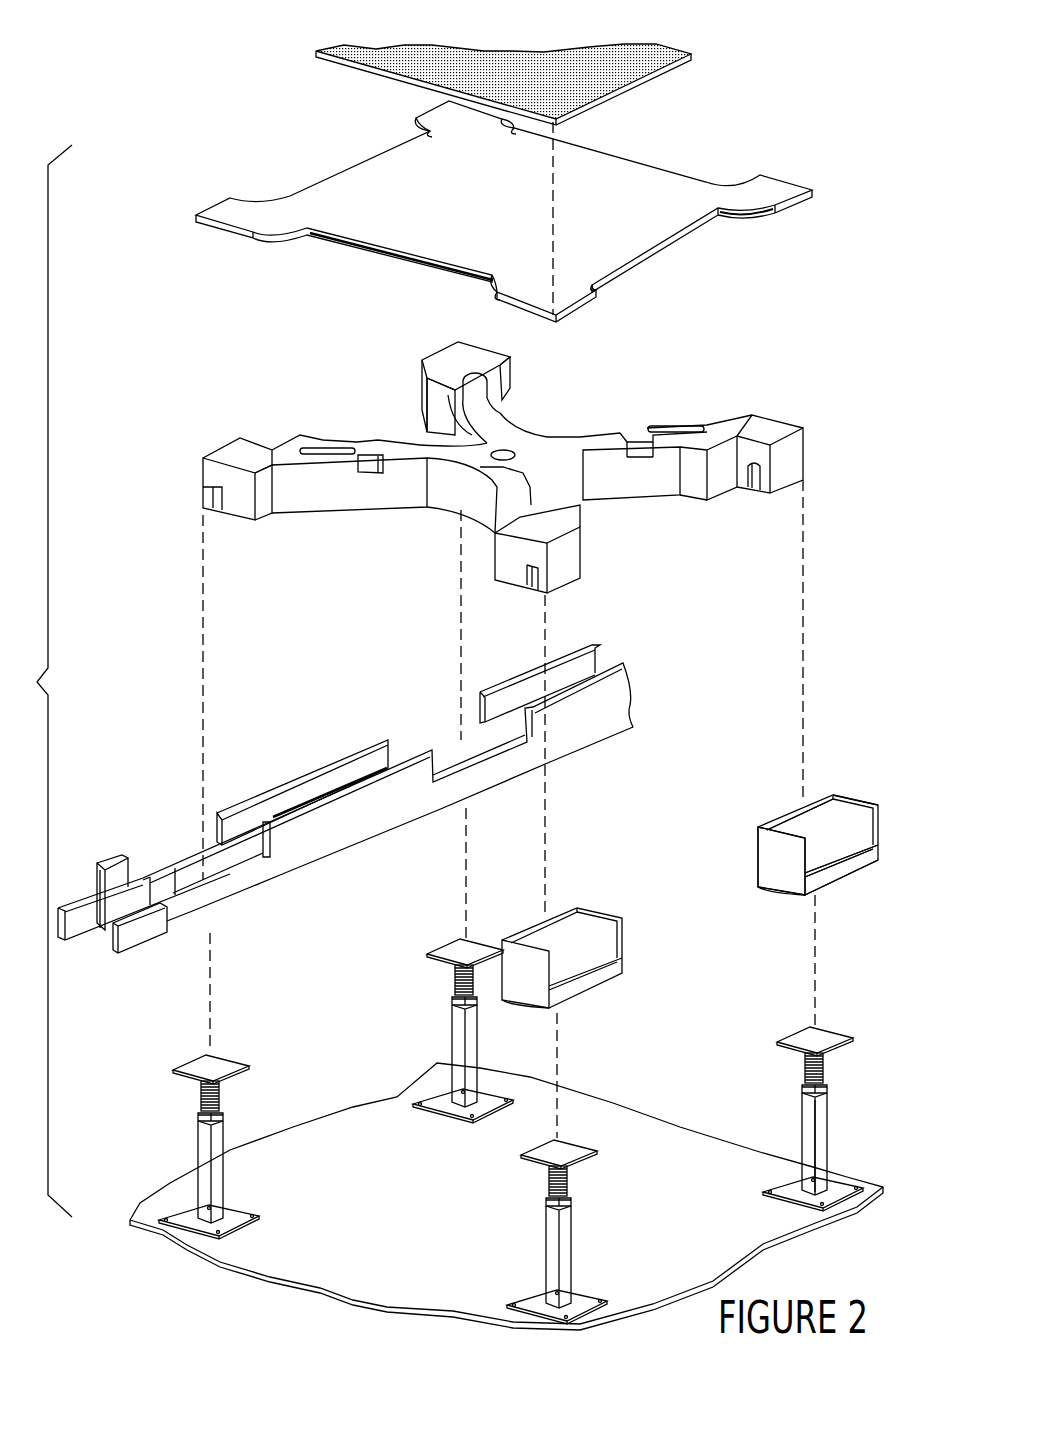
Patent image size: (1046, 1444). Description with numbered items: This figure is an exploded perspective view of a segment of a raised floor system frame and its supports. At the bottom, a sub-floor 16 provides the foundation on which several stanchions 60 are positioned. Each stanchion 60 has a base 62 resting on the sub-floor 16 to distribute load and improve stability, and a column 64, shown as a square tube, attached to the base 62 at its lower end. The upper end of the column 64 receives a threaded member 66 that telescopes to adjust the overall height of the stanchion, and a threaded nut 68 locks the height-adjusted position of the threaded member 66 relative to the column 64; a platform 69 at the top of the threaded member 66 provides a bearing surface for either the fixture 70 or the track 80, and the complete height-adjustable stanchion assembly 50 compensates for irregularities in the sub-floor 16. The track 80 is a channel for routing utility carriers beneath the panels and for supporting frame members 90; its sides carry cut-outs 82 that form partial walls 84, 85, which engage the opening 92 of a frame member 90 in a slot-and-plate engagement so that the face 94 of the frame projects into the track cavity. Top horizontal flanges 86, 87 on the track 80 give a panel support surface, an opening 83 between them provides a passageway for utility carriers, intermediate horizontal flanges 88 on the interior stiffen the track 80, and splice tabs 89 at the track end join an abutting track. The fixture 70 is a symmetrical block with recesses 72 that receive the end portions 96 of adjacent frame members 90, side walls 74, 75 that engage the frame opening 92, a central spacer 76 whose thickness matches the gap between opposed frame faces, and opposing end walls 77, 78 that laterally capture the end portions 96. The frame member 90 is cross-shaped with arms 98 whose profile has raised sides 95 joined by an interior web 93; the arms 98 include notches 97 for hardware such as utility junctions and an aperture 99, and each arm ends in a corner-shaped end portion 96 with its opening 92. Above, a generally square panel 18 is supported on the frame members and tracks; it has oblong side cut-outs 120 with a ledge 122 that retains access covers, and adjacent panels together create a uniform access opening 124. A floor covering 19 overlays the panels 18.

The sub-floor 16 is at (290, 1255).
The panel 18 is at (535, 211).
The floor covering 19 is at (665, 45).
The adjustable foot assembly 50 is at (804, 1121).
The stanchion 60 is at (829, 1103).
The base 62 is at (840, 1195).
The column 64 is at (828, 1160).
The threaded member 66 is at (800, 1065).
The threaded nut 68 is at (828, 1080).
The platform 69 is at (822, 1030).
The fixture 70 is at (787, 836).
The recess 72 is at (842, 830).
The side wall 74 is at (825, 875).
The side wall 75 is at (730, 868).
The spacer 76 is at (818, 810).
The end wall 77 is at (852, 797).
The end wall 78 is at (762, 835).
The track 80 is at (386, 834).
The cut-out 82 is at (183, 855).
The opening 83 is at (402, 742).
The partial wall 84 is at (225, 905).
The partial wall 85 is at (200, 825).
The top horizontal flange 86 is at (255, 795).
The top horizontal flange 87 is at (285, 808).
The intermediate horizontal flange 88 is at (100, 945).
The splice tab 89 is at (120, 960).
The frame member 90 is at (498, 466).
The opening 92 is at (217, 505).
The interior web 93 is at (498, 445).
The face 94 is at (568, 578).
The raised side 95 is at (407, 435).
The end portion 96 is at (810, 453).
The notch 97 is at (640, 428).
The arm 98 is at (360, 508).
The aperture 99 is at (510, 450).
The side cut-out 120 is at (650, 152).
The ledge 122 is at (284, 238).
The access opening 124 is at (358, 160).